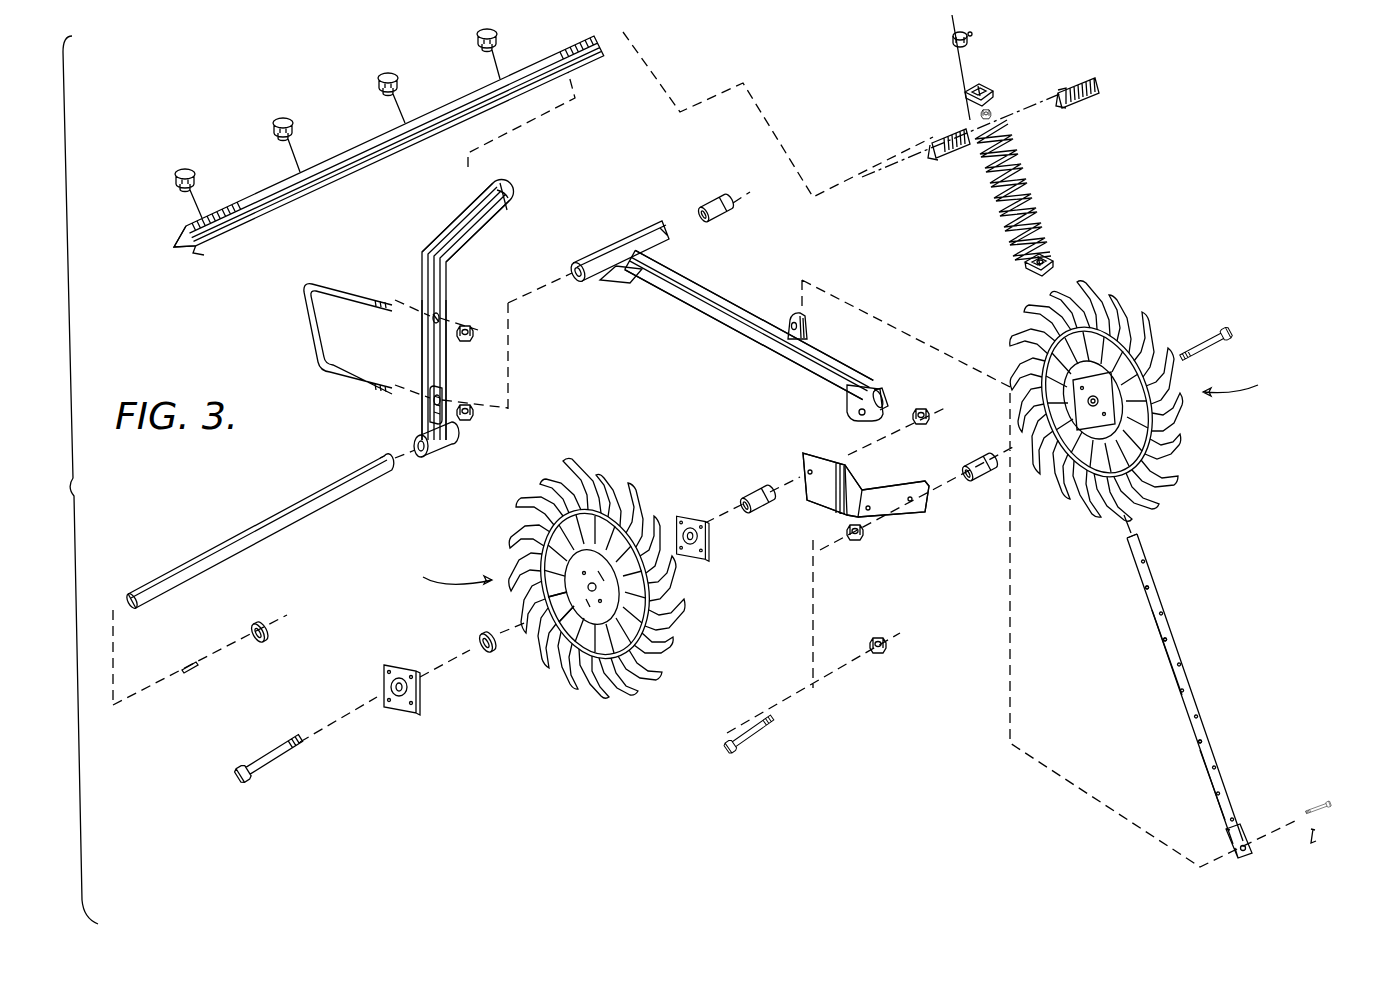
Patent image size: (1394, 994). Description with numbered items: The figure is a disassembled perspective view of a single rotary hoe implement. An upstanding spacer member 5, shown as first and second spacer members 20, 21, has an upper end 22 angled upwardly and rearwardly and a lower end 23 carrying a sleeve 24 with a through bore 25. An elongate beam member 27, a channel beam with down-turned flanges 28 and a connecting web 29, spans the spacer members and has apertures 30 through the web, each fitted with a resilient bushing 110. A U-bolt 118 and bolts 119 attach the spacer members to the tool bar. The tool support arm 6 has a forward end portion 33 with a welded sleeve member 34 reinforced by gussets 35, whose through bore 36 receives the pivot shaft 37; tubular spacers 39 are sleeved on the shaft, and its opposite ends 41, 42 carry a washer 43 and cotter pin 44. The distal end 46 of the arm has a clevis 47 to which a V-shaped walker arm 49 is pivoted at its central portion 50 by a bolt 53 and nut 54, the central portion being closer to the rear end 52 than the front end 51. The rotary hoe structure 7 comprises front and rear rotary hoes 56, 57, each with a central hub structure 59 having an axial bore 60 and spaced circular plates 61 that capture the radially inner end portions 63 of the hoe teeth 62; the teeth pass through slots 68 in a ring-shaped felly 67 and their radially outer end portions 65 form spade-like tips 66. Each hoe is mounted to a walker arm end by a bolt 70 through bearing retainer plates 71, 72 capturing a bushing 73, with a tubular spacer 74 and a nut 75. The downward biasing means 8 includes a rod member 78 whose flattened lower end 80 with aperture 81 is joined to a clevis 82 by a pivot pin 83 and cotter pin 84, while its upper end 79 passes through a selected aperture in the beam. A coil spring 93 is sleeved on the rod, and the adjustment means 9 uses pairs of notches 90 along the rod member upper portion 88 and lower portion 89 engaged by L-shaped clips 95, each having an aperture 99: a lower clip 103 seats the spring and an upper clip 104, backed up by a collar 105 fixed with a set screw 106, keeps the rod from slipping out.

The spacer member 5 is at (448, 312).
The tool support arm 6 is at (753, 320).
The rotary hoe structure 7 is at (841, 476).
The downward biasing means 8 is at (1168, 665).
The adjustment means 9 is at (968, 100).
The first spacer member 20 is at (448, 282).
The second spacer member 21 is at (422, 281).
The upper end 22 is at (448, 222).
The lower end 23 is at (428, 420).
The sleeve 24 is at (440, 447).
The through bore 25 is at (418, 446).
The beam member 27 is at (290, 166).
The down-turned flanges 28 is at (196, 256).
The connecting web 29 is at (182, 232).
The apertures 30 is at (1065, 98).
The forward end portion 33 is at (690, 285).
The sleeve member 34 is at (625, 242).
The gussets 35 is at (617, 272).
The through bore 36 is at (579, 268).
The pivot shaft 37 is at (302, 514).
The tubular spacers 39 is at (722, 216).
The end 41 is at (136, 596).
The end 42 is at (378, 465).
The washer 43 is at (264, 640).
The cotter pin 44 is at (191, 662).
The distal end 46 is at (848, 387).
The clevis 47 is at (885, 395).
The walker arm 49 is at (838, 500).
The central portion 50 is at (862, 488).
The end 51 is at (808, 468).
The end 52 is at (915, 510).
The bolt 53 is at (760, 735).
The nut 54 is at (888, 648).
The front rotary hoe 56 is at (1182, 452).
The rear rotary hoe 57 is at (560, 640).
The central hub structure 59 is at (567, 676).
The axial bore 60 is at (530, 547).
The circular plates 61 is at (620, 578).
The hoe teeth 62 is at (609, 698).
The radially inner end portions 63 is at (670, 600).
The radially outer end portions 65 is at (1120, 516).
The spade-like tips 66 is at (548, 480).
The felly 67 is at (600, 478).
The slots 68 is at (638, 500).
The bolt 70 is at (260, 754).
The bearing retainer plate 71 is at (405, 710).
The bearing retainer plate 72 is at (710, 540).
The bushing 73 is at (478, 641).
The tubular spacer 74 is at (752, 492).
The nut 75 is at (930, 415).
The rod member 78 is at (1190, 688).
The upper end 79 is at (1138, 538).
The lower end 80 is at (1228, 838).
The aperture 81 is at (1243, 855).
The clevis 82 is at (808, 326).
The pivot pin 83 is at (1330, 805).
The cotter pin 84 is at (1315, 838).
The rod member upper portion 88 is at (1172, 625).
The rod member lower portion 89 is at (1210, 765).
The notches 90 is at (1158, 602).
The coil spring 93 is at (1035, 194).
The clips 95 is at (980, 86).
The aperture 99 is at (1045, 262).
The lower clip 103 is at (1030, 280).
The upper clip 104 is at (985, 92).
The collar 105 is at (953, 38).
The set screw 106 is at (973, 35).
The bushing 110 is at (336, 88).
The U-bolt 118 is at (305, 322).
The bolts 119 is at (466, 404).